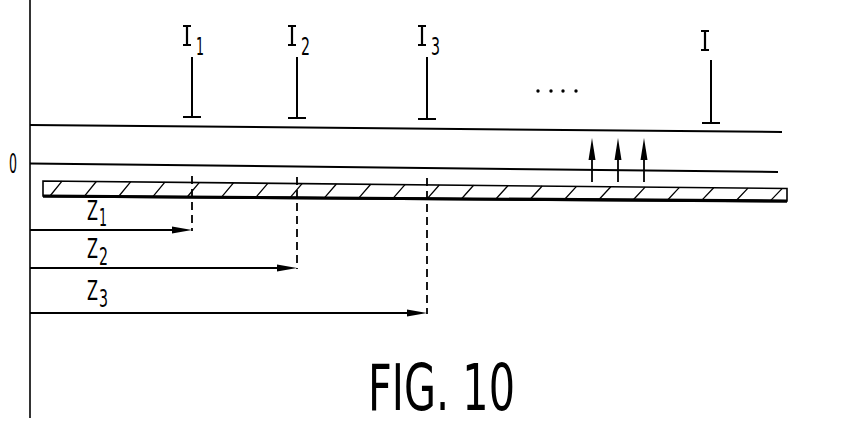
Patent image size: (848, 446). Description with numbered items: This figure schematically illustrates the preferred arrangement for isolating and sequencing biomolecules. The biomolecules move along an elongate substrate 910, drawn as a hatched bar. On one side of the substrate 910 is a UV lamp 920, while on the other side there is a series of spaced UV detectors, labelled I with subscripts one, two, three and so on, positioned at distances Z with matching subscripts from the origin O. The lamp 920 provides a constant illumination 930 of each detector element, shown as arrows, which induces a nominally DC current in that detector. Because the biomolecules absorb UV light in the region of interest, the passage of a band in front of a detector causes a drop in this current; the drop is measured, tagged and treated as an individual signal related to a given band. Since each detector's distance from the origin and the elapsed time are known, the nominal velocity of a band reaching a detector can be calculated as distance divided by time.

The elongate substrate 910 is at (498, 170).
The UV lamp 920 is at (560, 200).
The constant illumination 930 is at (648, 174).